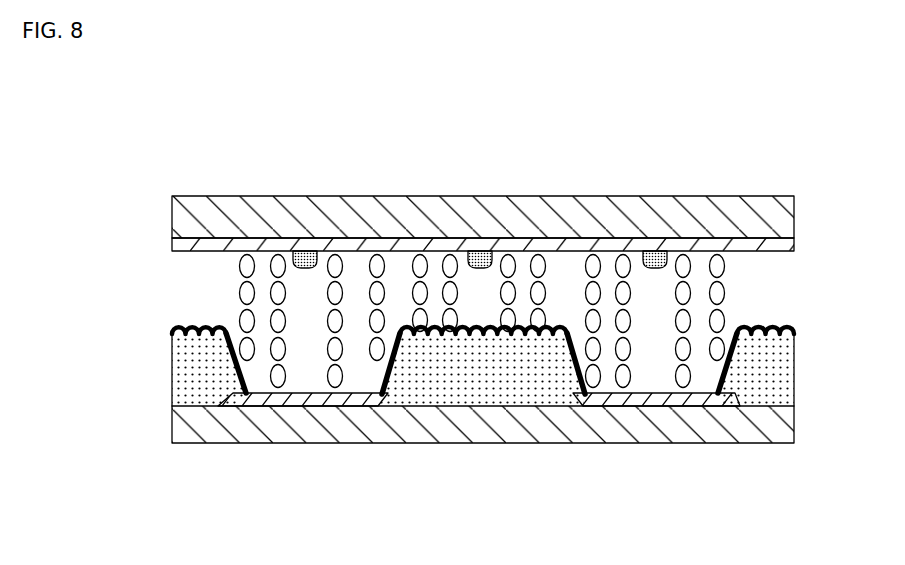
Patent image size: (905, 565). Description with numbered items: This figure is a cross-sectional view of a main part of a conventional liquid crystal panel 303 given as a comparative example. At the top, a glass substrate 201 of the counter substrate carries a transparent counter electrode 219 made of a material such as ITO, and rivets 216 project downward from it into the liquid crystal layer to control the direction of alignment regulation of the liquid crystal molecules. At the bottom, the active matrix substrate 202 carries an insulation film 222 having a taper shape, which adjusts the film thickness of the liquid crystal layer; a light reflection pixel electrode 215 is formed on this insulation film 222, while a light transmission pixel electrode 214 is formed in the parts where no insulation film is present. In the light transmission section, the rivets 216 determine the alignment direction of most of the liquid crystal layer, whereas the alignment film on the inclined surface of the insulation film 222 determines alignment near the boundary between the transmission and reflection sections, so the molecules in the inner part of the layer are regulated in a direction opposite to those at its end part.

The liquid crystal panel 303 is at (683, 129).
The glass substrate 201 is at (164, 197).
The active matrix substrate 202 is at (164, 333).
The rivets 216 is at (305, 257).
The counter electrode 219 is at (795, 246).
The light transmission pixel electrode 214 is at (303, 398).
The light reflection pixel electrode 215 is at (490, 338).
The insulation film 222 is at (445, 398).